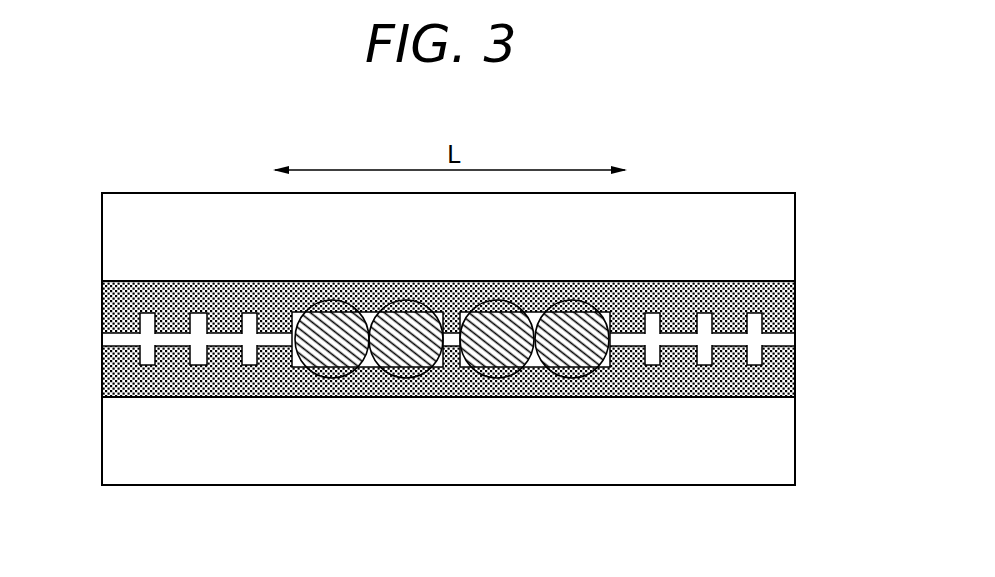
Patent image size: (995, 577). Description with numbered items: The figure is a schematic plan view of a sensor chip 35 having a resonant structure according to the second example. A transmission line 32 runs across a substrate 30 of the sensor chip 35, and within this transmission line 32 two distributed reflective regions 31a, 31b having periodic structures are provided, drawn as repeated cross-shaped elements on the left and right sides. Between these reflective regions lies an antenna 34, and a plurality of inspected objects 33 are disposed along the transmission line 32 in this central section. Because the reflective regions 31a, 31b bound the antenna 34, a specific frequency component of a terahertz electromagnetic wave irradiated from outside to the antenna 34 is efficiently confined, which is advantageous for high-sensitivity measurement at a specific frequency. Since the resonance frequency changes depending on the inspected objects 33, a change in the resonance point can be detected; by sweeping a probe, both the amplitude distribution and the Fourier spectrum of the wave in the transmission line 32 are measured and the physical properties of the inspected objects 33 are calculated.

The substrate 30 is at (743, 213).
The distributed reflective region 31a is at (168, 358).
The distributed reflective region 31b is at (732, 360).
The transmission line 32 is at (520, 298).
The inspected object 33 is at (498, 348).
The antenna 34 is at (455, 328).
The sensor chip 35 is at (678, 180).